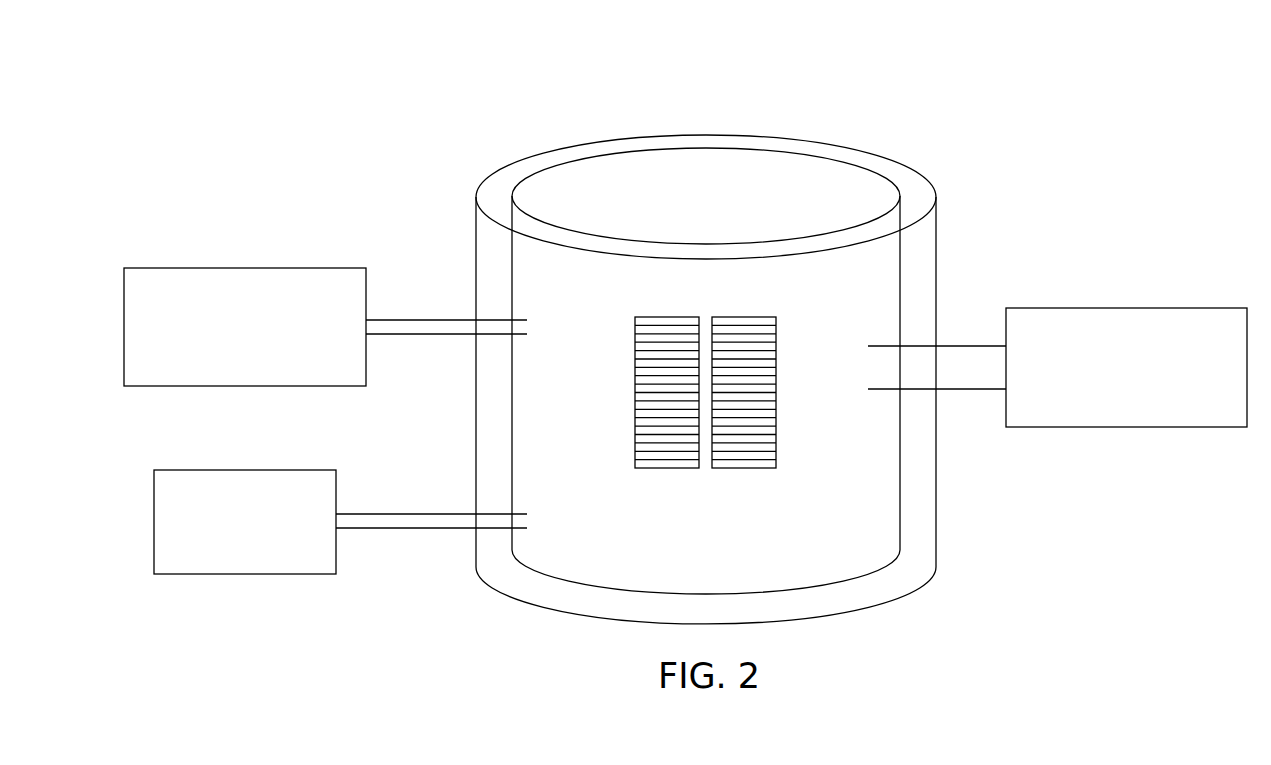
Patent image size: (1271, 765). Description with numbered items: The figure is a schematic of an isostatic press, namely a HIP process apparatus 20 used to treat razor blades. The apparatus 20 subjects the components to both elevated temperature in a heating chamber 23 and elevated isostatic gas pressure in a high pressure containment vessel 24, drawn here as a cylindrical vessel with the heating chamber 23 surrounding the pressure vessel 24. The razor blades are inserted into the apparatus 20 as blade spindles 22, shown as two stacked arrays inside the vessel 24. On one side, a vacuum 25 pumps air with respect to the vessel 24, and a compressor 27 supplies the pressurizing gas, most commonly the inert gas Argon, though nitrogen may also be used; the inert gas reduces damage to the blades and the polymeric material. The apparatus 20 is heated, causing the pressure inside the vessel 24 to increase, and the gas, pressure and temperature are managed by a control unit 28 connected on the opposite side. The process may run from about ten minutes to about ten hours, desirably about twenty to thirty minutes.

The HIP process apparatus 20 is at (1101, 134).
The blade spindles 22 is at (689, 472).
The heating chamber 23 is at (930, 183).
The high pressure containment vessel 24 is at (713, 143).
The vacuum 25 is at (262, 536).
The compressor 27 is at (262, 339).
The control unit 28 is at (1149, 379).